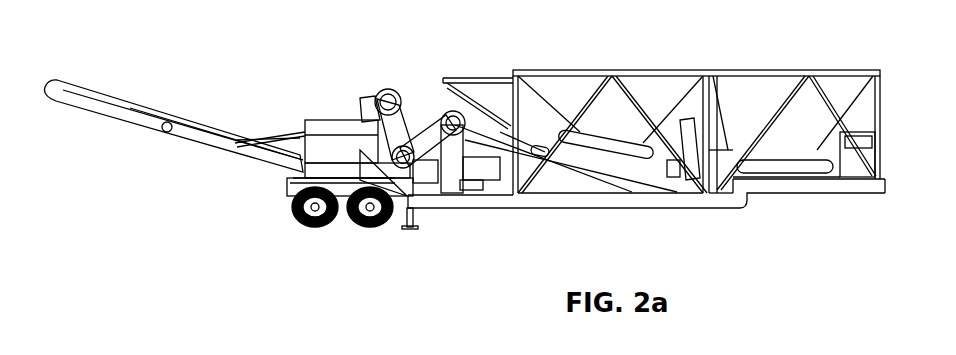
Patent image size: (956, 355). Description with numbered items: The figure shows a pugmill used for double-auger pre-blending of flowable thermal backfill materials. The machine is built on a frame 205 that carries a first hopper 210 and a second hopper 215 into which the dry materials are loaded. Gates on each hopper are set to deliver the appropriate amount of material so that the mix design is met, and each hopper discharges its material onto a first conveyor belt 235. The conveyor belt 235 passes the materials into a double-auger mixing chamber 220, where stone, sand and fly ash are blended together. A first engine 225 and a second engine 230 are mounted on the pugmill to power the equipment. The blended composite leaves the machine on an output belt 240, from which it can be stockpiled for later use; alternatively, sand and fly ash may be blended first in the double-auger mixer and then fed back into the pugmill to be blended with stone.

The frame 205 is at (752, 200).
The first hopper 210 is at (603, 102).
The second hopper 215 is at (810, 105).
The double-auger mixing chamber 220 is at (338, 134).
The first engine 225 is at (470, 183).
The second engine 230 is at (853, 173).
The first conveyor belt 235 is at (423, 102).
The output belt 240 is at (115, 118).